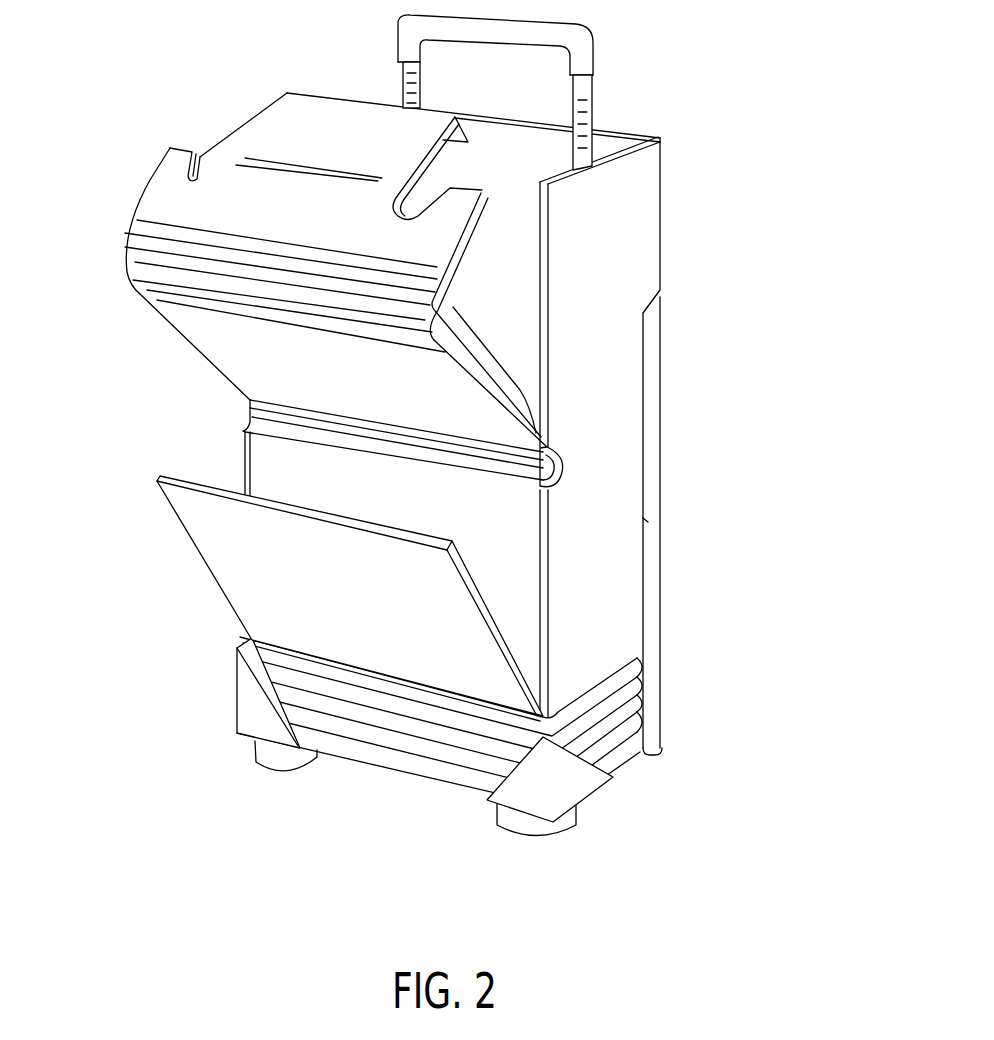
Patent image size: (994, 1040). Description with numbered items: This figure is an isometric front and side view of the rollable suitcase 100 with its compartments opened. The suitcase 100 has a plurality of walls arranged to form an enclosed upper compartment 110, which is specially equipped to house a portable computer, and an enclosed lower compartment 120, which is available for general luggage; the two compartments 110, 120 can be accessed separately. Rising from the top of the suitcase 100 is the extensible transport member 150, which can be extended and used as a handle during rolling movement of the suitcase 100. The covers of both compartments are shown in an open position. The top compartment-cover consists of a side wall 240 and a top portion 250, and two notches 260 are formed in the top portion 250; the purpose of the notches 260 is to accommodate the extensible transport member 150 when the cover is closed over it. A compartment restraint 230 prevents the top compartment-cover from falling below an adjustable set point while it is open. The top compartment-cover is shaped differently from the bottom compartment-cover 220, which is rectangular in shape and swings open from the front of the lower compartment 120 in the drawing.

The rollable suitcase 100 is at (476, 425).
The upper compartment 110 is at (492, 258).
The lower compartment 120 is at (489, 547).
The extensible transport member 150 is at (593, 98).
The bottom compartment-cover 220 is at (217, 528).
The compartment restraint 230 is at (385, 153).
The side wall 240 is at (242, 350).
The top portion 250 is at (261, 186).
The notches 260 is at (215, 110).